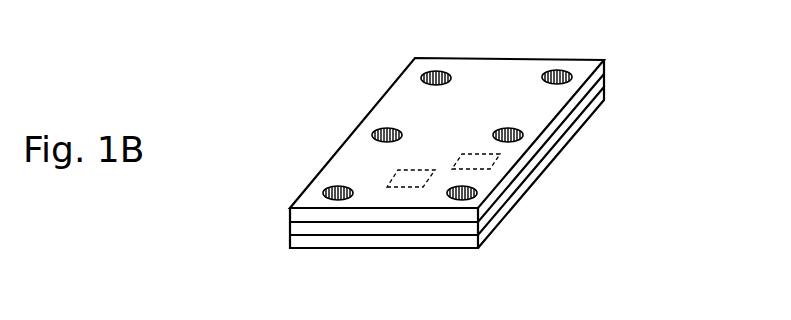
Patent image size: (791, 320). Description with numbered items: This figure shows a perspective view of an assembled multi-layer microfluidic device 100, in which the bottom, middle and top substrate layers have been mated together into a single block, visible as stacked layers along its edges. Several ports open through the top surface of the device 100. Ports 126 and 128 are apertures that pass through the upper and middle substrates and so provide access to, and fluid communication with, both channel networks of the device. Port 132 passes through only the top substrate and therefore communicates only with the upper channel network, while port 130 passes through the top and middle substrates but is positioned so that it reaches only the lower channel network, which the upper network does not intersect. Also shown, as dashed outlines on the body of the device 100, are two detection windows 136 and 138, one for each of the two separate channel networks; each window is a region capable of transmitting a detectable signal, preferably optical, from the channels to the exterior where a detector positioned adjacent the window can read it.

The device 100 is at (641, 31).
The port 126 is at (424, 69).
The port 128 is at (574, 69).
The port 130 is at (330, 183).
The port 132 is at (481, 186).
The detection window 136 is at (403, 194).
The detection window 138 is at (501, 153).